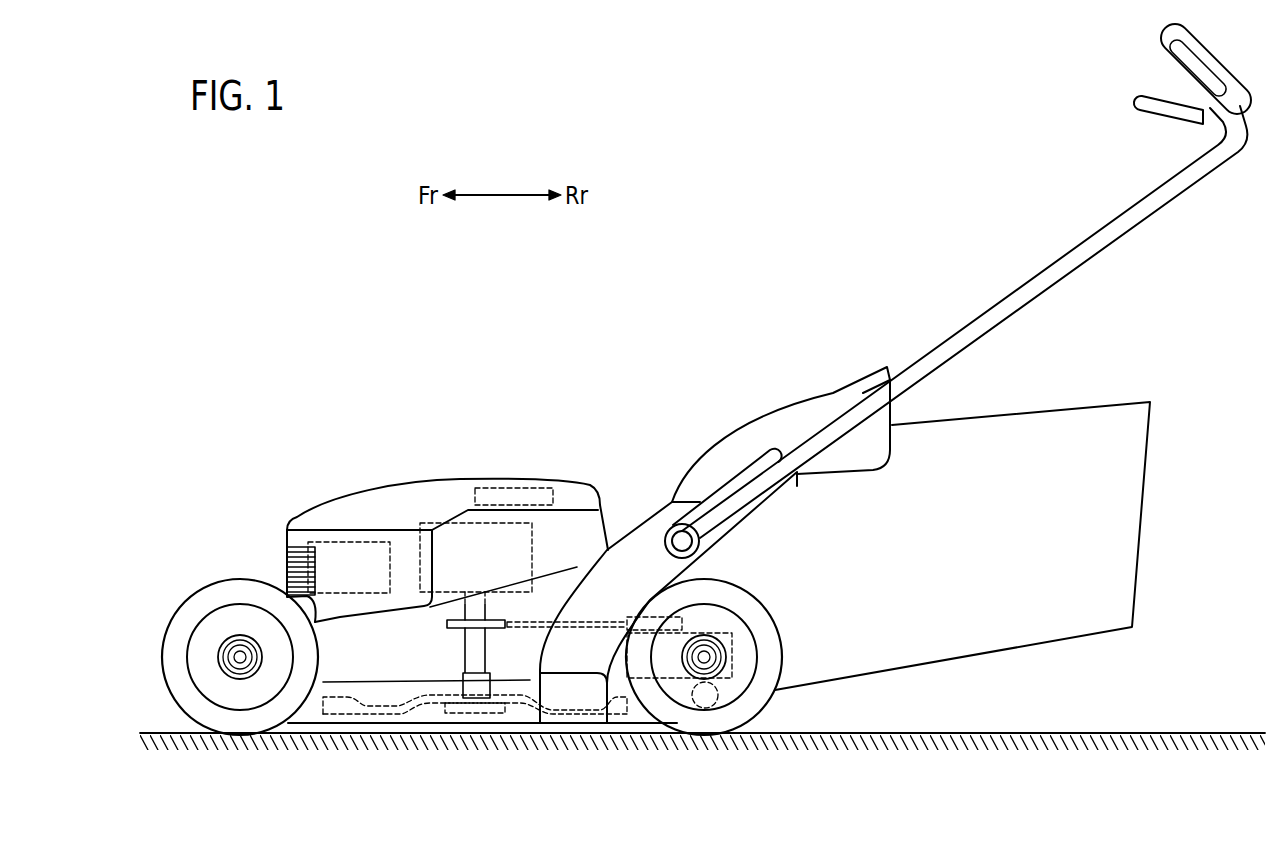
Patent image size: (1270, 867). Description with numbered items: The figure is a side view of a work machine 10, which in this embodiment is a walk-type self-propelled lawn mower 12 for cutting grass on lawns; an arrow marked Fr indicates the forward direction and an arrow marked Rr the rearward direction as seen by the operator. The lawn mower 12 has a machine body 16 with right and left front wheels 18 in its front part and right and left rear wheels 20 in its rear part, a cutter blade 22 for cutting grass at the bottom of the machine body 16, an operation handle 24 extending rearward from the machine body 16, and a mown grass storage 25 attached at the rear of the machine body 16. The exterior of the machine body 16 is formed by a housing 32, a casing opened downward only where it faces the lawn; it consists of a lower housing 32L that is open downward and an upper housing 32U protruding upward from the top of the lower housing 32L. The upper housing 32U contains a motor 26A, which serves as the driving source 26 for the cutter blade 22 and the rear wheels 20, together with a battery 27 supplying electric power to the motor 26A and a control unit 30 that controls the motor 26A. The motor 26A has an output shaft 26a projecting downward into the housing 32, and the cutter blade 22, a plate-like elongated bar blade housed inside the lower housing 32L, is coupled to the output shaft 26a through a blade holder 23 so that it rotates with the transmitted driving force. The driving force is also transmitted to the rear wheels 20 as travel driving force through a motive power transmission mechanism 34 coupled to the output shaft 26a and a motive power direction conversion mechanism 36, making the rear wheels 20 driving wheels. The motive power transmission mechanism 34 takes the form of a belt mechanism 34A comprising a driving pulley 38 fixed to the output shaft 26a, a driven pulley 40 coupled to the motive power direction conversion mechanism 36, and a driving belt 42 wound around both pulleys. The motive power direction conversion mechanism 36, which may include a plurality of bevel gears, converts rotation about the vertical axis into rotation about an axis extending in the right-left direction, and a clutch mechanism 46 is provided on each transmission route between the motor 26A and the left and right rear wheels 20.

The work machine 10 is at (339, 360).
The lawn mower 12 is at (706, 410).
The machine body 16 is at (280, 492).
The front wheels 18 is at (220, 593).
The rear wheels 20 is at (772, 650).
The cutter blade 22 is at (415, 708).
The blade holder 23 is at (495, 713).
The operation handle 24 is at (1100, 240).
The mown grass storage 25 is at (1128, 483).
The driving source 26 is at (463, 523).
The motor 26A is at (463, 500).
The output shaft 26a is at (488, 606).
The battery 27 is at (340, 540).
The control unit 30 is at (537, 488).
The housing 32 is at (580, 473).
The upper housing 32U is at (393, 507).
The lower housing 32L is at (363, 665).
The motive power transmission mechanism 34 is at (527, 630).
The belt mechanism 34A is at (538, 700).
The motive power direction conversion mechanism 36 is at (722, 632).
The driving pulley 38 is at (450, 630).
The driven pulley 40 is at (652, 616).
The driving belt 42 is at (592, 620).
The clutch mechanism 46 is at (707, 695).